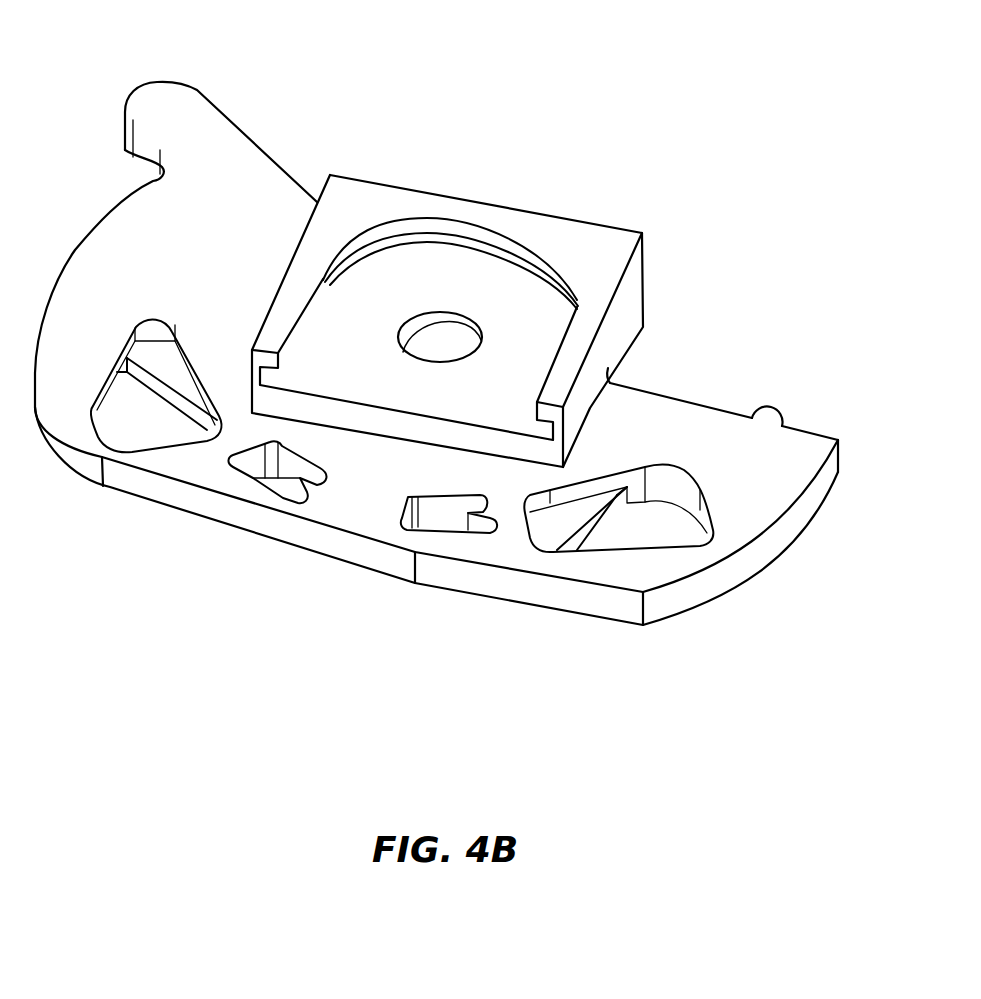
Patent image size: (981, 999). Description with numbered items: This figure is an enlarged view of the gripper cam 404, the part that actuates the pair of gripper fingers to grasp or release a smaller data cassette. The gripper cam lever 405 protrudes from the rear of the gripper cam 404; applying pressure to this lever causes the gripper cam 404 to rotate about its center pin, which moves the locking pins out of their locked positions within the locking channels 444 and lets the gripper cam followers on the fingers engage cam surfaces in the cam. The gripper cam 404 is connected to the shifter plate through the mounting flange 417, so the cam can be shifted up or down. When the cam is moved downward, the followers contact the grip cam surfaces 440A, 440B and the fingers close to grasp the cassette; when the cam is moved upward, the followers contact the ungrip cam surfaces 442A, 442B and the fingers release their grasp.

The gripper cam lever 405 is at (197, 90).
The gripper cam 404 is at (622, 227).
The mounting flange 417 is at (452, 238).
The grip cam surface 440A is at (622, 550).
The grip cam surface 440B is at (110, 400).
The ungrip cam surface 442A is at (602, 518).
The ungrip cam surface 442B is at (197, 413).
The locking channel 444 is at (297, 490).